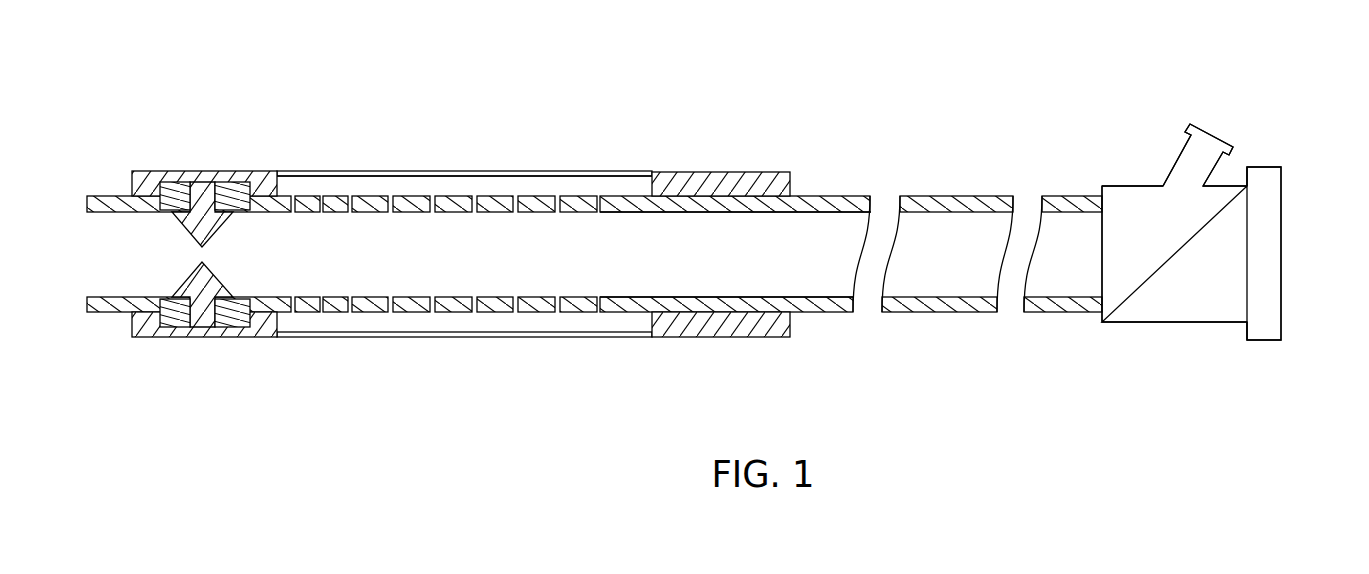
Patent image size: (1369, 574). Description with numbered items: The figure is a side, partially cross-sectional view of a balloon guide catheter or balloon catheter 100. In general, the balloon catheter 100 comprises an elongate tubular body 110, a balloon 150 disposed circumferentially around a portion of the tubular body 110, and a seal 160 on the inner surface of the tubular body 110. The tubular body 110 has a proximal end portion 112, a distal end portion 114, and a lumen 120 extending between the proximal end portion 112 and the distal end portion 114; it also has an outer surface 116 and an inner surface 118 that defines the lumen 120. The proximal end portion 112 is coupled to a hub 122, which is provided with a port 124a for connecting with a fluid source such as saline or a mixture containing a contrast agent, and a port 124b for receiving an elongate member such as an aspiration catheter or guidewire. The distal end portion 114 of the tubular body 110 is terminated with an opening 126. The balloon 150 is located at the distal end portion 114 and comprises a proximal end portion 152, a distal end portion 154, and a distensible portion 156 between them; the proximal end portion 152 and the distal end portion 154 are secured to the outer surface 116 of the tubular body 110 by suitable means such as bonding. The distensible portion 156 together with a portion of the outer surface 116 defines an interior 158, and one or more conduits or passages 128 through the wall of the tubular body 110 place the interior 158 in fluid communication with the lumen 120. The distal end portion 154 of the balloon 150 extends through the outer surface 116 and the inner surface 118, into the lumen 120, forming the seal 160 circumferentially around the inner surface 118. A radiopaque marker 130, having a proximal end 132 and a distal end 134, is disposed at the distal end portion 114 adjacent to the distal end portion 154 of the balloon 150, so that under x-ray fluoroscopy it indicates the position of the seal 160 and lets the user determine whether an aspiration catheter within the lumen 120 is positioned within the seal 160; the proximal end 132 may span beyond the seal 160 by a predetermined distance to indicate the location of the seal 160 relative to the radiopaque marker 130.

The balloon catheter 100 is at (735, 74).
The tubular body 110 is at (925, 322).
The proximal end portion 112 is at (1057, 312).
The distal end portion 114 is at (823, 312).
The outer surface 116 is at (832, 196).
The inner surface 118 is at (798, 212).
The lumen 120 is at (652, 275).
The hub 122 is at (1179, 332).
The port 124a is at (1190, 124).
The port 124b is at (1282, 167).
The opening 126 is at (87, 303).
The conduits or passages 128 is at (472, 213).
The radiopaque marker 130 is at (233, 182).
The proximal end 132 is at (252, 322).
The distal end 134 is at (152, 327).
The balloon 150 is at (508, 137).
The proximal end portion 152 is at (733, 172).
The distal end portion 154 is at (152, 170).
The distensible portion 156 is at (468, 171).
The interior 158 is at (553, 184).
The seal 160 is at (215, 233).